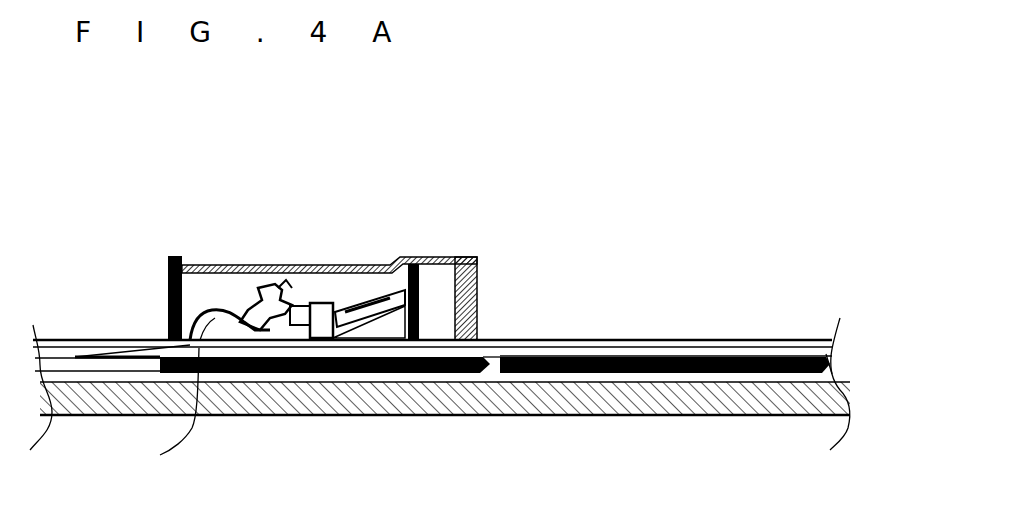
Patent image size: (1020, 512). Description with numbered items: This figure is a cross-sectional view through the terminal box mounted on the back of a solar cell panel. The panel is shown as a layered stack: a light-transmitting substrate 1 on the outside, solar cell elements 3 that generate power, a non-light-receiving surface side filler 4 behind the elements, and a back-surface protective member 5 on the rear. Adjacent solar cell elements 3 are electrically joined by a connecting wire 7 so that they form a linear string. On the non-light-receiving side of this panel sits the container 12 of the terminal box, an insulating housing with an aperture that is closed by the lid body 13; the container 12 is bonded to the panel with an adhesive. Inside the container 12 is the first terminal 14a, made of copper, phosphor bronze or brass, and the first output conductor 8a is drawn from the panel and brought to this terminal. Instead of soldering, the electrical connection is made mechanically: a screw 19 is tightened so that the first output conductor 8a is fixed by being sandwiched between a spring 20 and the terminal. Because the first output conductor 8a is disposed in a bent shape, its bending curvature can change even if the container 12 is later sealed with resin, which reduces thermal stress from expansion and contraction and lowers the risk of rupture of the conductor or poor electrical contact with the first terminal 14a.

The light-transmitting substrate 1 is at (735, 417).
The solar cell element 3 is at (632, 341).
The non-light-receiving surface side filler 4 is at (834, 382).
The back-surface protective member 5 is at (742, 340).
The connecting wire 7 is at (490, 356).
The first output conductor 8a is at (168, 303).
The container 12 is at (478, 278).
The lid body 13 is at (432, 258).
The first terminal 14a is at (144, 412).
The screw 19 is at (278, 285).
The spring 20 is at (232, 302).